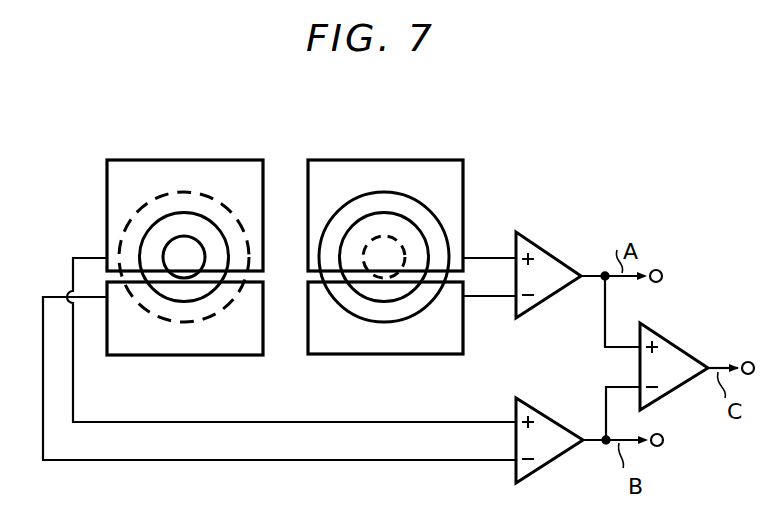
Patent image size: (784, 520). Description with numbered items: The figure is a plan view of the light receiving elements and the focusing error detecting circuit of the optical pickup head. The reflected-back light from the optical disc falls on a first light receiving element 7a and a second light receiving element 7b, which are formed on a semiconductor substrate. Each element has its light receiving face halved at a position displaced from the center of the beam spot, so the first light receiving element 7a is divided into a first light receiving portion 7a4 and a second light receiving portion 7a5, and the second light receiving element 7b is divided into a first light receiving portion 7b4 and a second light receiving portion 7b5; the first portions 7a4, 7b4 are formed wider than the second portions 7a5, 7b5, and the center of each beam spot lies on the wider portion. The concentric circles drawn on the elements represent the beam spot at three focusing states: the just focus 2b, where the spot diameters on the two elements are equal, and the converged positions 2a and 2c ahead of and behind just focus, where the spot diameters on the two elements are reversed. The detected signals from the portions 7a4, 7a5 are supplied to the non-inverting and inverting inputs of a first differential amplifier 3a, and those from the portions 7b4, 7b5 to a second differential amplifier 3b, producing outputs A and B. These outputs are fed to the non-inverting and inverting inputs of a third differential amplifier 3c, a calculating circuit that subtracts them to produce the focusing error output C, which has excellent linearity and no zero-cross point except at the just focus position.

The first light receiving element 7a is at (428, 253).
The first light receiving portion of the first light receiving element 7a4 is at (452, 185).
The second light receiving portion of the first light receiving element 7a5 is at (388, 342).
The second light receiving element 7b is at (149, 254).
The first light receiving portion of the second light receiving element 7b4 is at (115, 207).
The second light receiving portion of the second light receiving element 7b5 is at (156, 337).
The converged position 2a is at (202, 238).
The just focus 2b is at (220, 298).
The converged position 2c is at (367, 247).
The first differential amplifier 3a is at (560, 262).
The second differential amplifier 3b is at (560, 425).
The third differential amplifier 3c is at (687, 354).